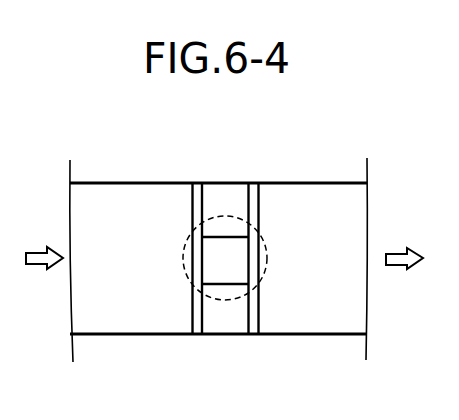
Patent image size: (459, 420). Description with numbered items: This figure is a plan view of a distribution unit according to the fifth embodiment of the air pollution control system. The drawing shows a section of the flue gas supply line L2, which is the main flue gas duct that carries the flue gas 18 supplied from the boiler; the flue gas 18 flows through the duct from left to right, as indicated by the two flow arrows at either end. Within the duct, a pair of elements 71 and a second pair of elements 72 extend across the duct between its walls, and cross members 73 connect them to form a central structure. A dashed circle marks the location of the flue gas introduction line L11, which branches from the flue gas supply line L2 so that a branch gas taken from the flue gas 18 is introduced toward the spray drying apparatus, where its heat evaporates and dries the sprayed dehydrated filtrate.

The flue gas 18 is at (39, 252).
The first wall pair 71 is at (191, 208).
The second wall pair 72 is at (260, 208).
The cross member 73 is at (224, 285).
The flue gas supply line L2 is at (345, 183).
The flue gas introduction line L11 is at (182, 272).